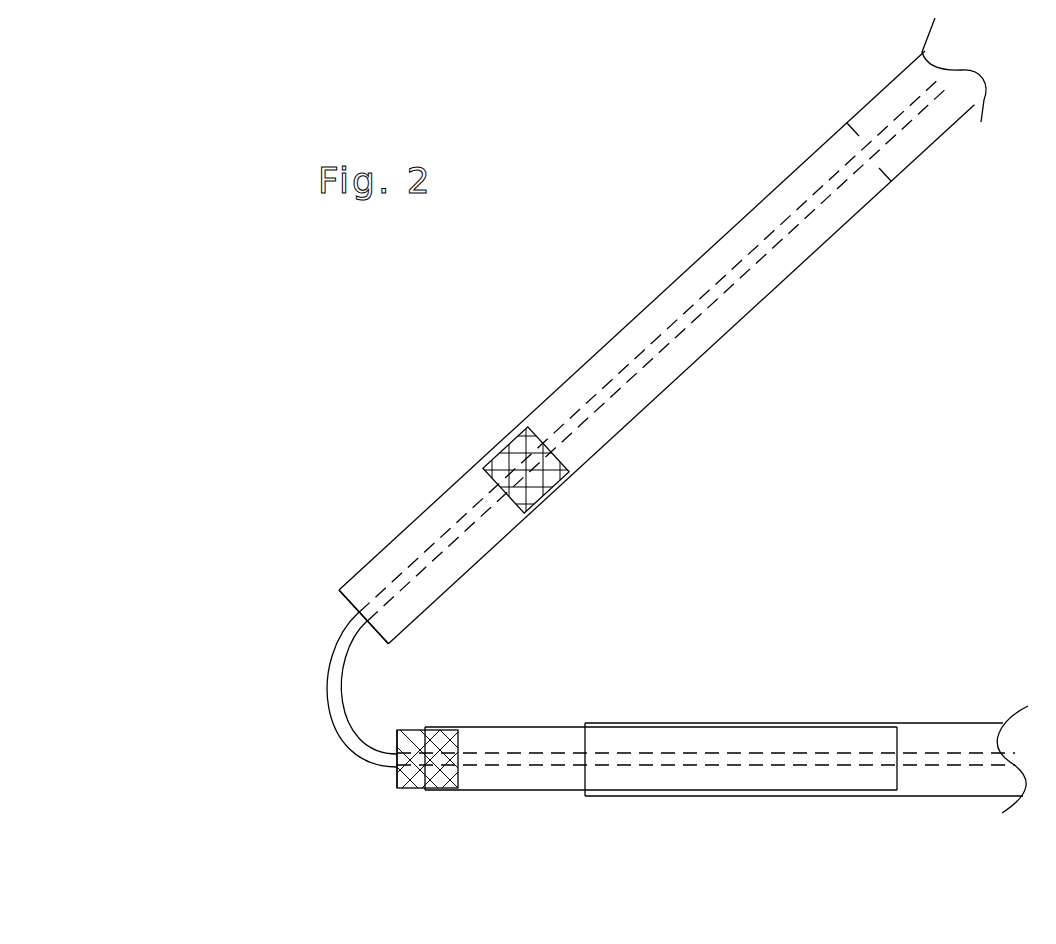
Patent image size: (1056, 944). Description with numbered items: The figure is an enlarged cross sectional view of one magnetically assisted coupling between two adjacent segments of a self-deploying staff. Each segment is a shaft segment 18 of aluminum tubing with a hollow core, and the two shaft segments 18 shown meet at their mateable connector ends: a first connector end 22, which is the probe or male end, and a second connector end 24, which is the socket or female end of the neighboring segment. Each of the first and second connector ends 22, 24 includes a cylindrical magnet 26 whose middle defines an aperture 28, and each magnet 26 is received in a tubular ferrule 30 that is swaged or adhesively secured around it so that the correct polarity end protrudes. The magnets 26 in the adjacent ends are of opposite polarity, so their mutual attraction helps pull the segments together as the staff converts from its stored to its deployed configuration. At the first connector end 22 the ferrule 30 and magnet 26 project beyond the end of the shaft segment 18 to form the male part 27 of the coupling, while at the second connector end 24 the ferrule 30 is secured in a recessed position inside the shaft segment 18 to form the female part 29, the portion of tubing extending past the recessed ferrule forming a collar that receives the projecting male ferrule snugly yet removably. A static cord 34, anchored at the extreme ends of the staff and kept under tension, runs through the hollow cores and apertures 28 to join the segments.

The shaft segment 18 is at (702, 255).
The female part of mateable coupling 29 is at (538, 373).
The second connector end 24 is at (329, 605).
The static cord 34 is at (340, 700).
The male part of mateable coupling 27 is at (522, 704).
The tubular ferrule 30 is at (517, 775).
The first connector end 22 is at (592, 699).
The magnet 26 is at (413, 772).
The aperture 28 is at (381, 772).